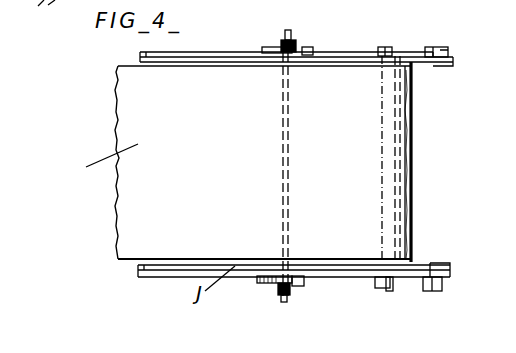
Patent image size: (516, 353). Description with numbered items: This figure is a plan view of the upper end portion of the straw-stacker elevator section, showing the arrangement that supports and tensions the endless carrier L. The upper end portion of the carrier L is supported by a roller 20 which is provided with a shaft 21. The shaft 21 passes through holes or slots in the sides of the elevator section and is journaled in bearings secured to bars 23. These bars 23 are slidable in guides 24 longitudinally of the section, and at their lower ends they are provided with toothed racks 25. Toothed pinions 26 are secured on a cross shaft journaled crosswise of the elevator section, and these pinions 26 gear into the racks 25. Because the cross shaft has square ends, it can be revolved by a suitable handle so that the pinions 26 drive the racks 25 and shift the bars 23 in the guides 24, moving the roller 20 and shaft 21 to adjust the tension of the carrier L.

The roller 20 is at (410, 67).
The shaft 21 is at (289, 30).
The bars 23 is at (332, 52).
The guides 24 is at (388, 47).
The toothed racks 25 is at (265, 47).
The toothed pinions 26 is at (295, 44).